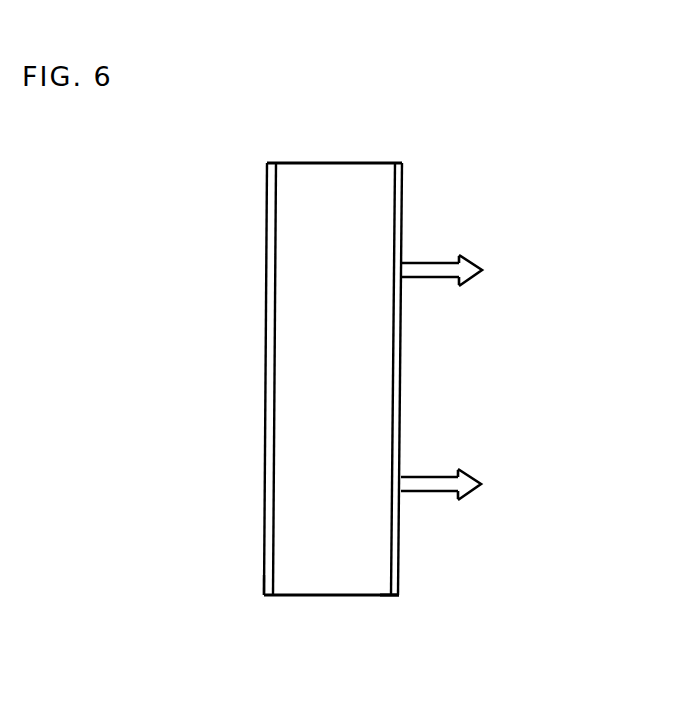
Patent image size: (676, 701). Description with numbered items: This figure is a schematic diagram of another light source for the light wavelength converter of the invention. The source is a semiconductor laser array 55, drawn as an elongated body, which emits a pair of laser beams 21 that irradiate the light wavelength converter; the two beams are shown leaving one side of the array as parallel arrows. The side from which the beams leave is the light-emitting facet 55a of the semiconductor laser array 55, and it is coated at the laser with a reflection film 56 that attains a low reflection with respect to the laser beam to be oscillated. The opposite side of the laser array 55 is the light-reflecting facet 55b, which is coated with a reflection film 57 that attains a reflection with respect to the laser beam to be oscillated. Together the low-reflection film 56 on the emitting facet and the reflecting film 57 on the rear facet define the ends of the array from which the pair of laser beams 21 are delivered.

The semiconductor laser array 55 is at (320, 162).
The light-emitting facet 55a is at (397, 160).
The light-reflecting facet 55b is at (276, 160).
The reflection film 56 is at (398, 594).
The reflection film 57 is at (266, 571).
The laser beams 21 is at (422, 258).